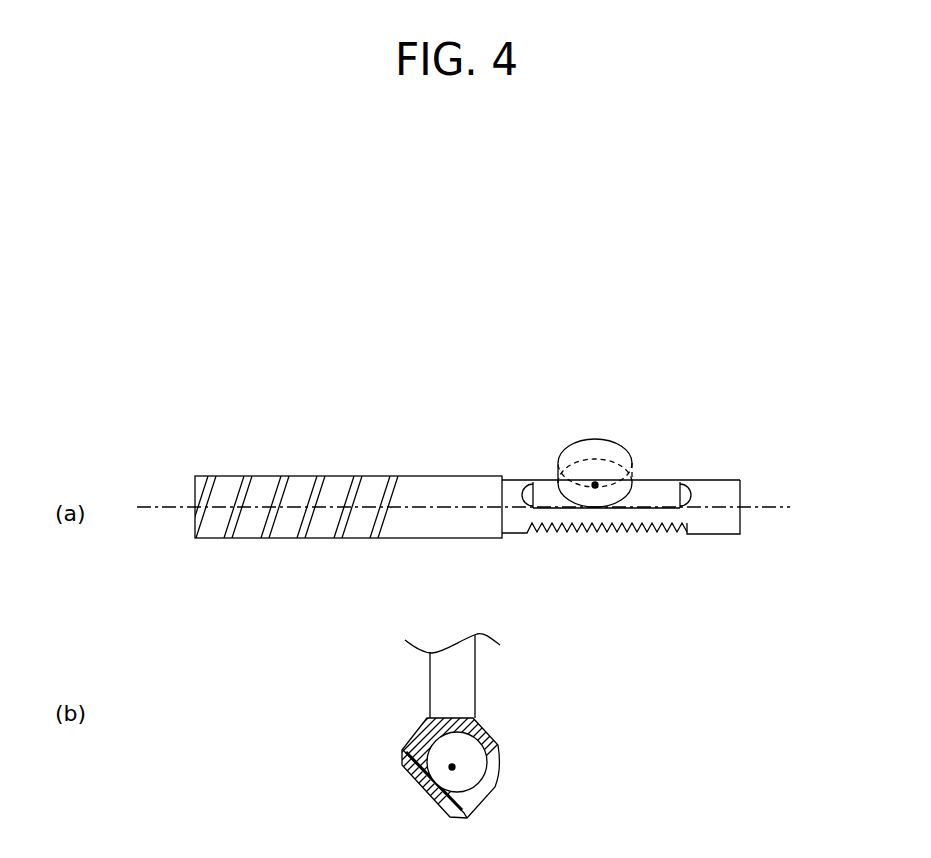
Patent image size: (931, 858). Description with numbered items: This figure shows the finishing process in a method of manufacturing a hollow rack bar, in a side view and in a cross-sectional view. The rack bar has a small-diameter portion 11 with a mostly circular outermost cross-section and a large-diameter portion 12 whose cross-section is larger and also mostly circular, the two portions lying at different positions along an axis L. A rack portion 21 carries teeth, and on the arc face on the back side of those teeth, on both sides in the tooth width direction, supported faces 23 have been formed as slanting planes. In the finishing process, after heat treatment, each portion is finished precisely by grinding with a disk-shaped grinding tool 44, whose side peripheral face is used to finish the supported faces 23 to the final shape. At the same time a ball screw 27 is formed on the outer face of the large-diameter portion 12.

The small-diameter portion 11 is at (715, 480).
The large-diameter portion 12 is at (203, 474).
The rack portion 21 is at (620, 527).
The supported faces 23 is at (651, 480).
The ball screw 27 is at (274, 487).
The grinding tool 44 is at (572, 440).
The axis L is at (758, 507).